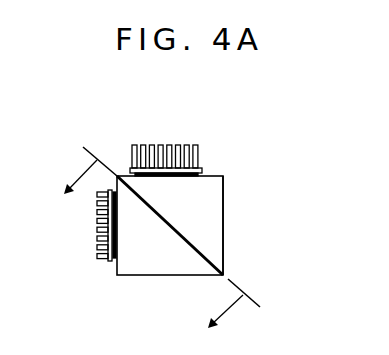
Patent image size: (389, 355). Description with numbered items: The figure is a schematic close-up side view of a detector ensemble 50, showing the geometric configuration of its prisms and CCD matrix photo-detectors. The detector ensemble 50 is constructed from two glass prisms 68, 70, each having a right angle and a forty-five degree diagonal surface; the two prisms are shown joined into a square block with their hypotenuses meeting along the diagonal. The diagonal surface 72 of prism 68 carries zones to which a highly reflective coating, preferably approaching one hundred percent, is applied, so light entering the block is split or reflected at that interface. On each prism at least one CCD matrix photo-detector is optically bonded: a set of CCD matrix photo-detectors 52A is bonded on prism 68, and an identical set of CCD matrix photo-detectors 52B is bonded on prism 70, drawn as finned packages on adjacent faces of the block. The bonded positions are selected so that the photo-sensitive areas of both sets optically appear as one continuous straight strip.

The detector ensemble 50 is at (239, 164).
The CCD matrix photo-detectors 52A is at (96, 219).
The CCD matrix photo-detectors 52B is at (152, 147).
The prism 68 is at (128, 267).
The prism 70 is at (214, 205).
The diagonal surface 72 is at (211, 255).